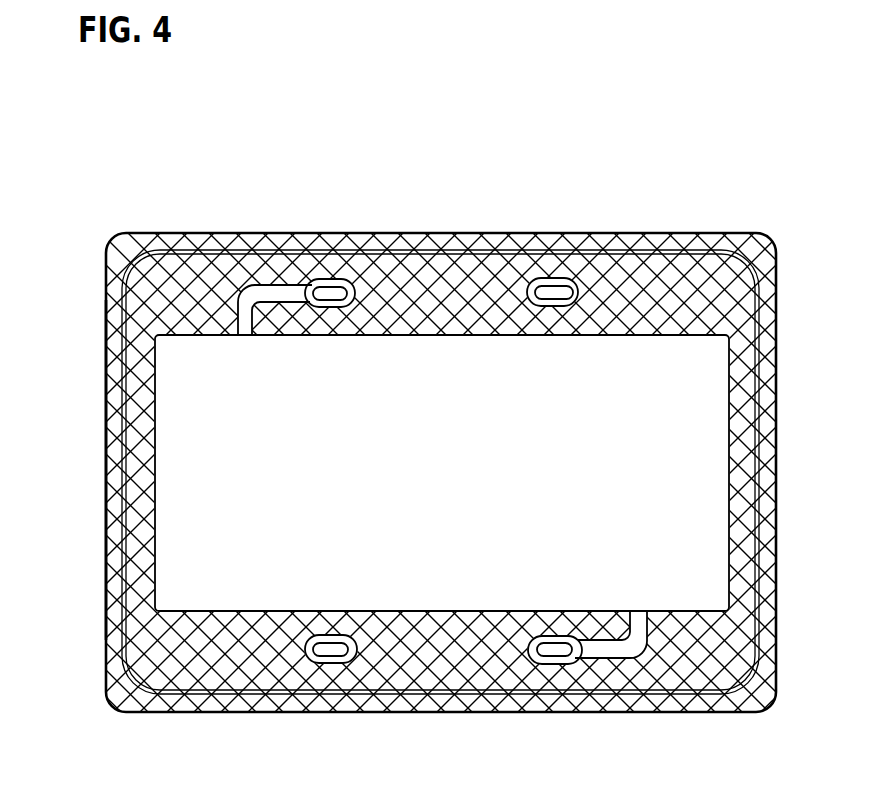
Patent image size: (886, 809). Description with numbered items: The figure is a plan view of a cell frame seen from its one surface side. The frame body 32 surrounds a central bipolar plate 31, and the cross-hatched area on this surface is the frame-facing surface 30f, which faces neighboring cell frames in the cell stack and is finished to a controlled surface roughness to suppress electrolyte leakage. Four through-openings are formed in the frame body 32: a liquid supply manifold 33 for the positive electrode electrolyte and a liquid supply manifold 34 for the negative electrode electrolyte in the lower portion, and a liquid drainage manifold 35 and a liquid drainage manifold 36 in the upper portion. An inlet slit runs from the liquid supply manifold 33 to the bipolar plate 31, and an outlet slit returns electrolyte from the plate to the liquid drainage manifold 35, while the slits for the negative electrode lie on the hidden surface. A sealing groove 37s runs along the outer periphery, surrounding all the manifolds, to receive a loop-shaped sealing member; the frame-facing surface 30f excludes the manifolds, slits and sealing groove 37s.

The frame body 32 is at (148, 232).
The frame-facing surface 30f is at (210, 264).
The bipolar plate 31 is at (452, 365).
The liquid drainage manifold 35 is at (327, 292).
The liquid drainage manifold 36 is at (553, 292).
The liquid supply manifold 34 is at (330, 653).
The liquid supply manifold 33 is at (558, 653).
The sealing groove 37s is at (106, 533).